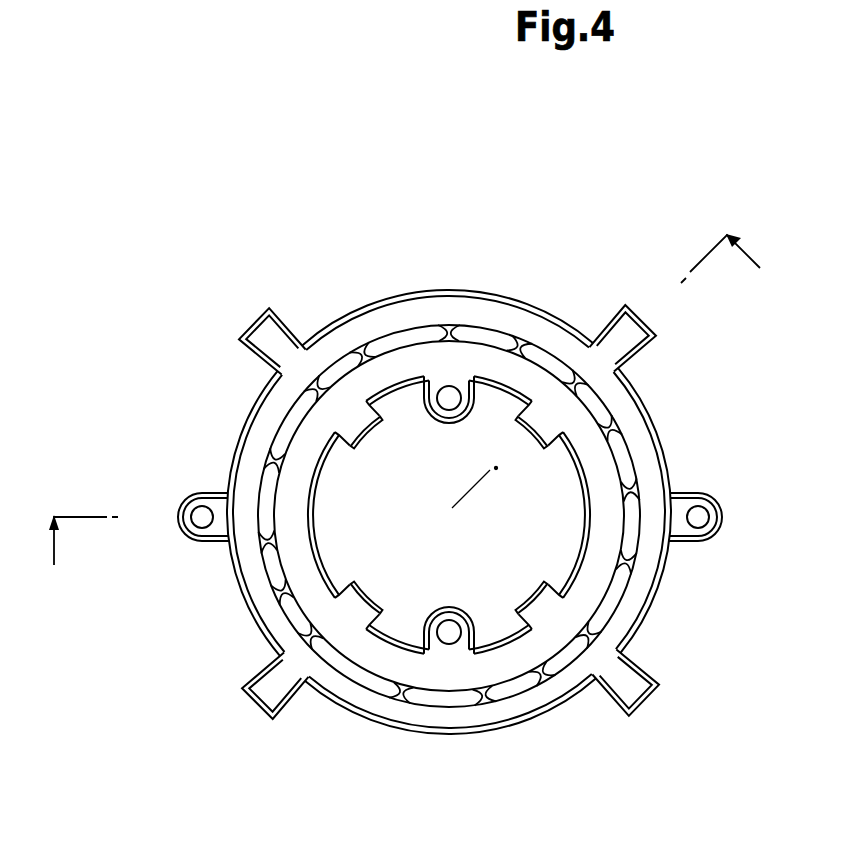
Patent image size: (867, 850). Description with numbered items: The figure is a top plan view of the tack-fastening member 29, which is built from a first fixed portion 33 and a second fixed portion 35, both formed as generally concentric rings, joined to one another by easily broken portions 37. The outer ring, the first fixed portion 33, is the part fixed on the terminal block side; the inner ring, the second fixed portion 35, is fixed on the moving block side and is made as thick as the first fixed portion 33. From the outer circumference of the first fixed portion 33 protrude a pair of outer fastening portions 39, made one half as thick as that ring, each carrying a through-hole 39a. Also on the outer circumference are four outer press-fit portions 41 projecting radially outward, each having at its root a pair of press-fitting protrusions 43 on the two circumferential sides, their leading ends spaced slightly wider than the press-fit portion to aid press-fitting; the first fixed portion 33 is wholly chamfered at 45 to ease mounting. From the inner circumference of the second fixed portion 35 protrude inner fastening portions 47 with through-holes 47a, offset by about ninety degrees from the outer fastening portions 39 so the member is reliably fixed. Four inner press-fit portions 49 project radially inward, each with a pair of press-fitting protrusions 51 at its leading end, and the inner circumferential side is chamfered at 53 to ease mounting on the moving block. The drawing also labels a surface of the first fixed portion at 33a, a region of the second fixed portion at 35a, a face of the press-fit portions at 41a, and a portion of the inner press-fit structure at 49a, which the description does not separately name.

The tack-fastening member 29 is at (580, 228).
The first fixed portion 33 is at (449, 453).
The outer ring flange 33a is at (505, 300).
The second fixed portion 35 is at (487, 430).
The inner ring face 35a is at (487, 447).
The easily broken portions 37 is at (520, 345).
The outer fastening portions 39 is at (455, 484).
The through-holes 39a is at (200, 508).
The outer press-fit portions 41 is at (453, 488).
The projection side face 41a is at (266, 314).
The press-fitting protrusions 43 is at (453, 488).
The chamfers 45 is at (453, 488).
The inner fastening portions 47 is at (461, 515).
The through-holes 47a is at (442, 424).
The inner press-fit portions 49 is at (438, 515).
The tab side arc 49a is at (580, 330).
The press-fitting protrusions 51 is at (430, 515).
The chamfers 53 is at (582, 518).